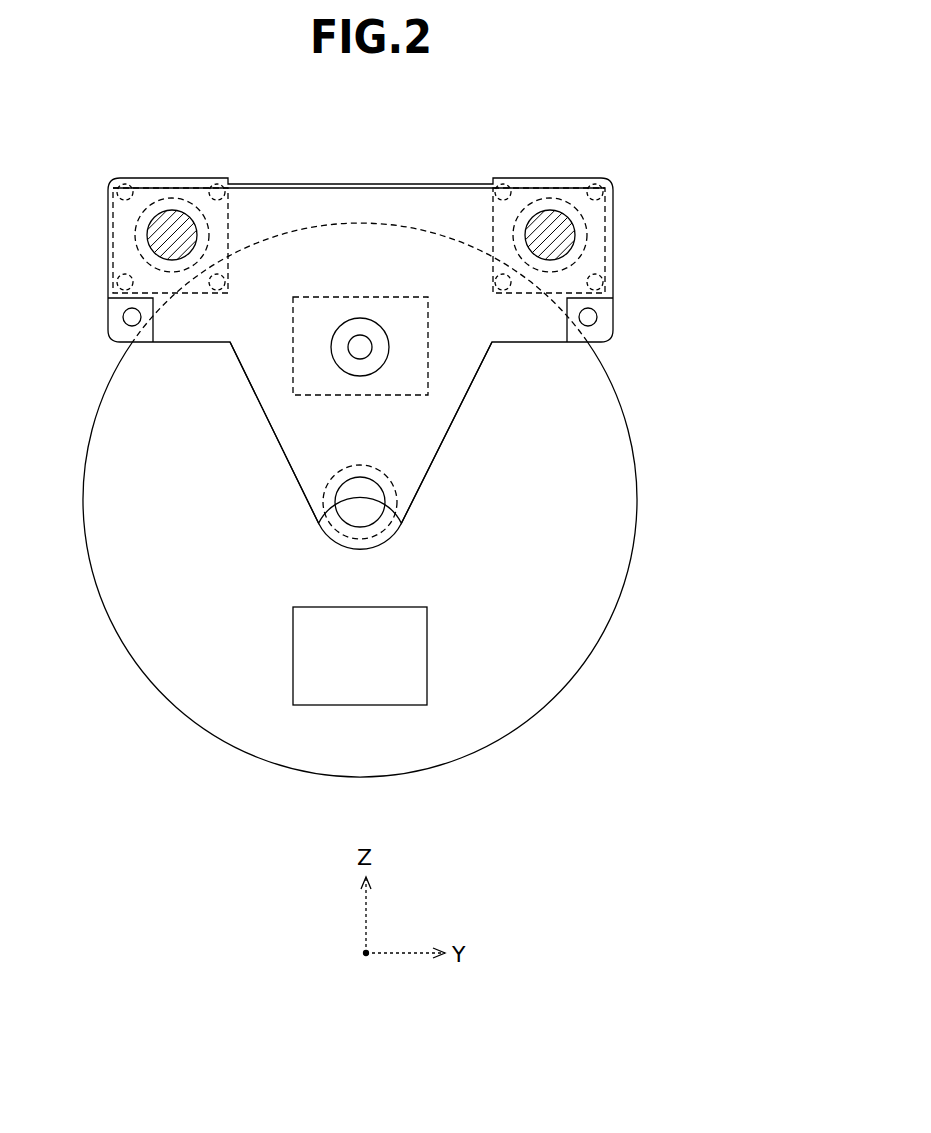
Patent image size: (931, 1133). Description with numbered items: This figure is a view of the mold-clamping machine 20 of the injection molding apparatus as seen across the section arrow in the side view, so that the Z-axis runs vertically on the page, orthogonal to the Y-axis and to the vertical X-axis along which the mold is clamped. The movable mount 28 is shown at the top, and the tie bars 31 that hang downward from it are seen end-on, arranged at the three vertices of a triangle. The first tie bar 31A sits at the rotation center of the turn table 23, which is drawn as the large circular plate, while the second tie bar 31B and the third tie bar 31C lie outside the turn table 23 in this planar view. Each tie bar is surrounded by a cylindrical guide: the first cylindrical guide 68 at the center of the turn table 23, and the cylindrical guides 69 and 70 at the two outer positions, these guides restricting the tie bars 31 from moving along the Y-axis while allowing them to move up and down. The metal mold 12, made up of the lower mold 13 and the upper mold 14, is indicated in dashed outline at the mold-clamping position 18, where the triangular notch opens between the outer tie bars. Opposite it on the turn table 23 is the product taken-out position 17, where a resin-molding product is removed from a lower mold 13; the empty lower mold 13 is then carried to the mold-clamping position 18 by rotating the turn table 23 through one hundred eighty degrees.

The metal mold 12 is at (435, 387).
The lower mold 13 is at (410, 655).
The upper mold 14 is at (440, 371).
The product taken-out position 17 is at (372, 500).
The mold-clamping position 18 is at (260, 391).
The mold-clamping machine 20 is at (417, 292).
The turn table 23 is at (577, 603).
The movable mount 28 is at (378, 207).
The tie bars 31 is at (376, 330).
The first tie bar 31A is at (364, 502).
The second tie bar 31B is at (178, 232).
The third tie bar 31C is at (551, 232).
The first cylindrical guide 68 is at (328, 518).
The cylindrical guide 69 is at (137, 233).
The cylindrical guide 70 is at (590, 232).